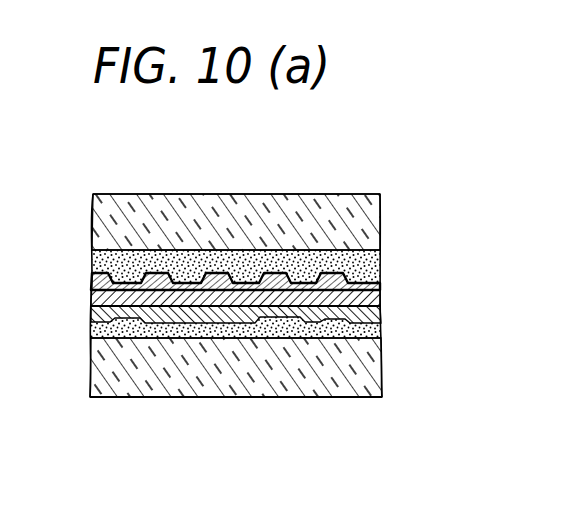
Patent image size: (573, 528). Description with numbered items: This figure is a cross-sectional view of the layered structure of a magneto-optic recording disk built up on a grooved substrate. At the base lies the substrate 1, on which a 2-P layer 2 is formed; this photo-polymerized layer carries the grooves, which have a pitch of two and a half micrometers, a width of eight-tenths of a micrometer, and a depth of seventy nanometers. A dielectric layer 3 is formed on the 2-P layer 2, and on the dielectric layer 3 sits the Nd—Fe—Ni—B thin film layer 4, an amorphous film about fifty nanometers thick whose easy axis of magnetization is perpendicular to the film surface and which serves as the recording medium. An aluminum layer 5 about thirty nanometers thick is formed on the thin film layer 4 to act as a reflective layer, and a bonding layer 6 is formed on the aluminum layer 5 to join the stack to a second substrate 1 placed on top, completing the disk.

The substrate 1 is at (380, 214).
The 2-P layer 2 is at (380, 256).
The dielectric layer 3 is at (380, 285).
The Nd—Fe—Ni—B thin film layer 4 is at (380, 300).
The aluminum layer 5 is at (380, 320).
The bonding layer 6 is at (380, 333).